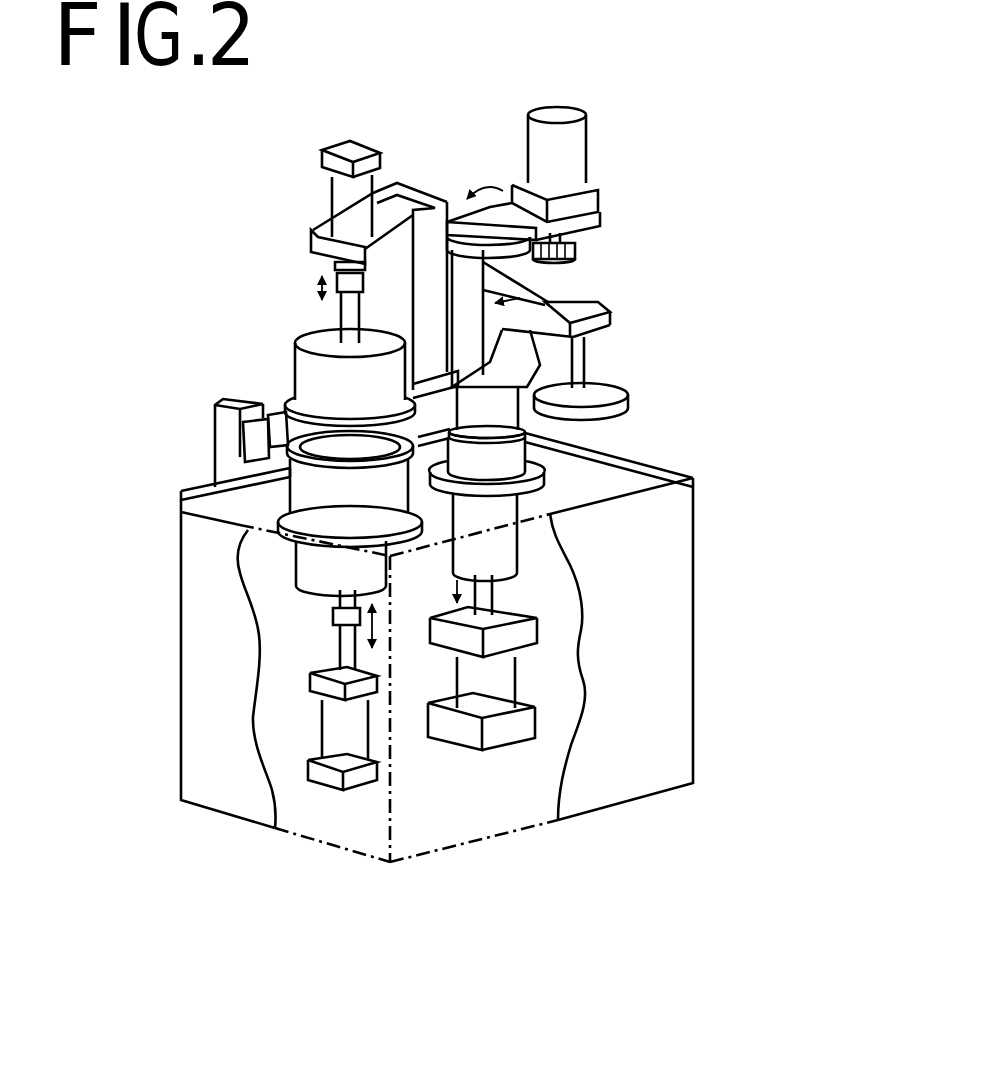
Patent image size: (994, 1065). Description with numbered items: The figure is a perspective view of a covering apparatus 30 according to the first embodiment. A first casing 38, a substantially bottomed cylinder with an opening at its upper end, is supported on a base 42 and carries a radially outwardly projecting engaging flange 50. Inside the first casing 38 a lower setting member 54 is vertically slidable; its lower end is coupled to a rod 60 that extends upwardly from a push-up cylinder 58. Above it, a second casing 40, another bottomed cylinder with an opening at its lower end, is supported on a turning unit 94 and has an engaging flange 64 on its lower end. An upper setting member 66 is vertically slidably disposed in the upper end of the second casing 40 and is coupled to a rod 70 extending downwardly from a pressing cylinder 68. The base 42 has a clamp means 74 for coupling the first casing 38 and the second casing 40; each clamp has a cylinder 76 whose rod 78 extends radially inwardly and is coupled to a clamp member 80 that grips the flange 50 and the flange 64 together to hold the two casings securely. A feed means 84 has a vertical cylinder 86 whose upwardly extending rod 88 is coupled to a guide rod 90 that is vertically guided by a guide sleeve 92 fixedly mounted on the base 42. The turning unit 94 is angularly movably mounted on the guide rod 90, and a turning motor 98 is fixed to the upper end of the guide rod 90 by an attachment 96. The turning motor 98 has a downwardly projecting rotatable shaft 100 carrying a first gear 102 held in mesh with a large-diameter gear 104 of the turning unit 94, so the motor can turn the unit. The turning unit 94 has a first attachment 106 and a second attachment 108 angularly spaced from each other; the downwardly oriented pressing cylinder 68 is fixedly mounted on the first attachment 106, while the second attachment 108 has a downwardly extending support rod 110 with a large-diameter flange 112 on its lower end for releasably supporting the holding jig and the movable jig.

The covering apparatus 30 is at (660, 53).
The first casing 38 is at (268, 503).
The second casing 40 is at (287, 332).
The base 42 is at (683, 600).
The engaging flange 50 is at (350, 513).
The lower setting member 54 is at (333, 604).
The push-up cylinder 58 is at (343, 748).
The rod 60 is at (337, 647).
The engaging flange 64 is at (295, 372).
The upper setting member 66 is at (333, 315).
The pressing cylinder 68 is at (363, 183).
The rod 70 is at (322, 265).
The clamp means 74 is at (185, 410).
The cylinder 76 is at (214, 430).
The rod 78 is at (215, 420).
The clamp member 80 is at (243, 452).
The feed means 84 is at (657, 269).
The vertical cylinder 86 is at (500, 677).
The rod 88 is at (503, 588).
The guide rod 90 is at (493, 413).
The guide sleeve 92 is at (500, 463).
The turning unit 94 is at (598, 303).
The attachment 96 is at (597, 182).
The turning motor 98 is at (560, 113).
The rotatable shaft 100 is at (597, 220).
The first gear 102 is at (590, 250).
The large-diameter gear 104 is at (567, 260).
The first attachment 106 is at (400, 237).
The second attachment 108 is at (588, 342).
The support rod 110 is at (607, 390).
The large-diameter flange 112 is at (615, 418).